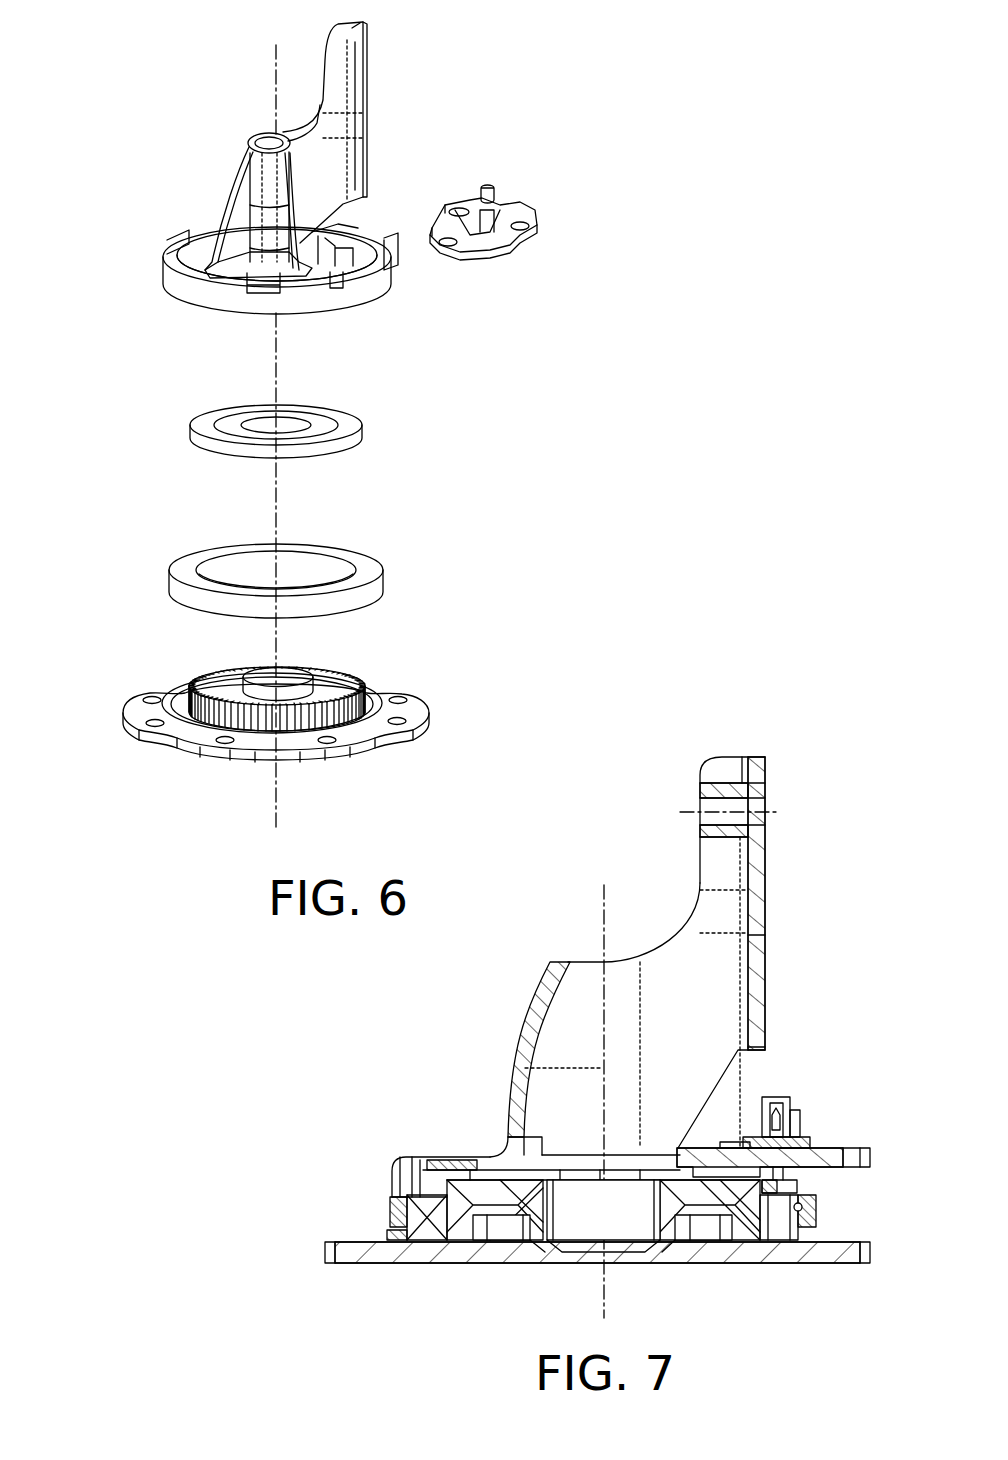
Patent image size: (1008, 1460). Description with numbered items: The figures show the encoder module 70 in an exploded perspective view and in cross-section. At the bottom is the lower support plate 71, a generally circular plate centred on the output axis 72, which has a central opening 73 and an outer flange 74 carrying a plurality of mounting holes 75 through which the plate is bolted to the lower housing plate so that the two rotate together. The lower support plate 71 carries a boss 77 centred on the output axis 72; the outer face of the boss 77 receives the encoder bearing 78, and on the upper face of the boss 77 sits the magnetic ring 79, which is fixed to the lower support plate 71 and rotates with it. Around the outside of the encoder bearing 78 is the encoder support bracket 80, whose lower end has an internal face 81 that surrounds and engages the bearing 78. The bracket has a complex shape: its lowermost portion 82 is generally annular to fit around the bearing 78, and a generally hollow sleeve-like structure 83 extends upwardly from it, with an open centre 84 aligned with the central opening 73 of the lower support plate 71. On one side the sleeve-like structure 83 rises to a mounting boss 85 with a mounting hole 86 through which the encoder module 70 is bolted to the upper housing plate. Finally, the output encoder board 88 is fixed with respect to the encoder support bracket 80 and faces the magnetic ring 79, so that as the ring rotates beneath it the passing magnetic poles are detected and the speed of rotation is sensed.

In FIG. 6, the encoder module 70 is at (128, 474).
In FIG. 6, the lower support plate 71 is at (247, 724).
In FIG. 6, the output axis 72 is at (280, 784).
In FIG. 7, the output axis 72 is at (605, 1285).
In FIG. 6, the central opening 73 is at (265, 675).
In FIG. 7, the central opening 73 is at (575, 1218).
In FIG. 6, the outer flange 74 is at (400, 712).
In FIG. 6, the mounting holes 75 is at (212, 762).
In FIG. 6, the boss 77 is at (336, 685).
In FIG. 7, the boss 77 is at (395, 1250).
In FIG. 6, the encoder bearing 78 is at (172, 585).
In FIG. 7, the encoder bearing 78 is at (408, 1212).
In FIG. 6, the magnetic ring 79 is at (205, 420).
In FIG. 7, the magnetic ring 79 is at (478, 1188).
In FIG. 6, the encoder support bracket 80 is at (294, 144).
In FIG. 7, the encoder support bracket 80 is at (670, 957).
In FIG. 7, the internal face 81 is at (805, 1204).
In FIG. 6, the lowermost portion 82 is at (166, 270).
In FIG. 6, the sleeve-like structure 83 is at (232, 170).
In FIG. 7, the sleeve-like structure 83 is at (530, 1005).
In FIG. 6, the open centre 84 is at (268, 140).
In FIG. 7, the open centre 84 is at (645, 952).
In FIG. 6, the mounting boss 85 is at (367, 48).
In FIG. 7, the mounting boss 85 is at (760, 862).
In FIG. 7, the mounting hole 86 is at (700, 798).
In FIG. 6, the output encoder board 88 is at (492, 195).
In FIG. 7, the output encoder board 88 is at (800, 1150).